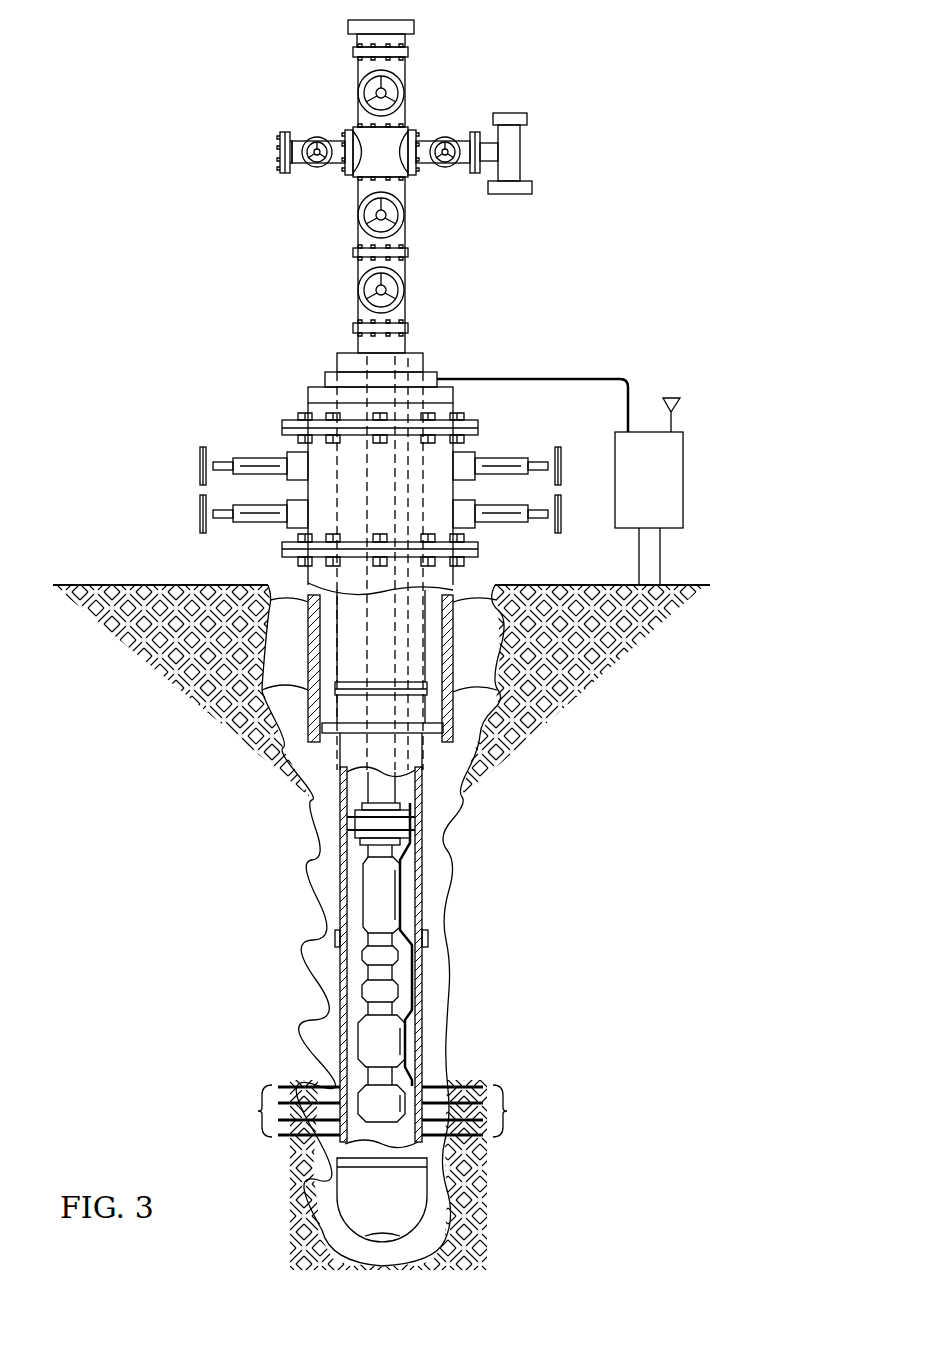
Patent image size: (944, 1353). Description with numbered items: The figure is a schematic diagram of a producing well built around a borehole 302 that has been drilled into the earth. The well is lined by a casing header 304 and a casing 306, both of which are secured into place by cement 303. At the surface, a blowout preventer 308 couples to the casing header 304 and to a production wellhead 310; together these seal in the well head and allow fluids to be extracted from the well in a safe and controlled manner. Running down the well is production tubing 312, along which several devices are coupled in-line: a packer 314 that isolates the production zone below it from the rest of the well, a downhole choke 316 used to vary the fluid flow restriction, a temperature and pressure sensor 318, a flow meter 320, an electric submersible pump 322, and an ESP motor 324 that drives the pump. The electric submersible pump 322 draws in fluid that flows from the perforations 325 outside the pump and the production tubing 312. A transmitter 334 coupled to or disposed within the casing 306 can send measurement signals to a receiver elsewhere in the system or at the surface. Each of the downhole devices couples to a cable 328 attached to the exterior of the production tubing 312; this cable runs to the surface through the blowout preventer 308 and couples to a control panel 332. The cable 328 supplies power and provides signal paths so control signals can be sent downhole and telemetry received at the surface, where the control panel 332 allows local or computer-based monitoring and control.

The borehole 302 is at (265, 700).
The cement 303 is at (320, 885).
The casing header 304 is at (470, 700).
The casing 306 is at (422, 850).
The blowout preventer 308 is at (289, 396).
The production wellhead 310 is at (340, 118).
The production tubing 312 is at (367, 790).
The packer 314 is at (353, 838).
The downhole choke 316 is at (372, 906).
The temperature and pressure sensor 318 is at (362, 958).
The flow meter 320 is at (360, 990).
The electric submersible pump 322 is at (355, 1037).
The ESP motor 324 is at (388, 1110).
The perforations 325 is at (381, 1111).
The cable 328 is at (525, 378).
The control panel 332 is at (632, 493).
The transmitter 334 is at (428, 940).